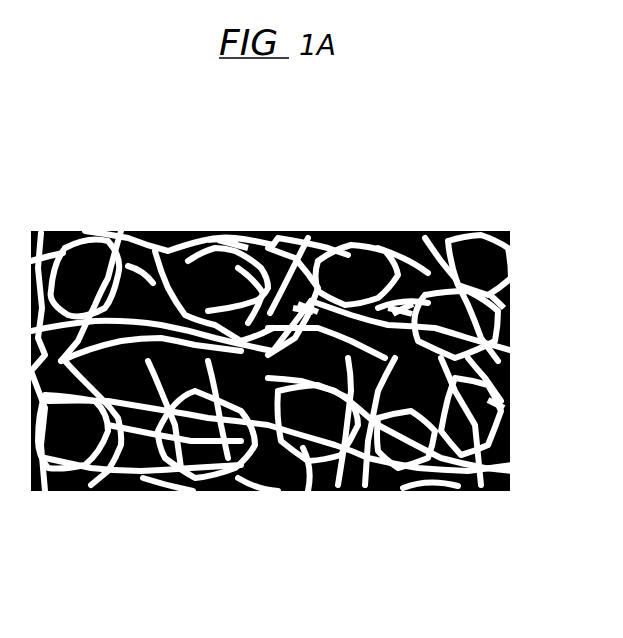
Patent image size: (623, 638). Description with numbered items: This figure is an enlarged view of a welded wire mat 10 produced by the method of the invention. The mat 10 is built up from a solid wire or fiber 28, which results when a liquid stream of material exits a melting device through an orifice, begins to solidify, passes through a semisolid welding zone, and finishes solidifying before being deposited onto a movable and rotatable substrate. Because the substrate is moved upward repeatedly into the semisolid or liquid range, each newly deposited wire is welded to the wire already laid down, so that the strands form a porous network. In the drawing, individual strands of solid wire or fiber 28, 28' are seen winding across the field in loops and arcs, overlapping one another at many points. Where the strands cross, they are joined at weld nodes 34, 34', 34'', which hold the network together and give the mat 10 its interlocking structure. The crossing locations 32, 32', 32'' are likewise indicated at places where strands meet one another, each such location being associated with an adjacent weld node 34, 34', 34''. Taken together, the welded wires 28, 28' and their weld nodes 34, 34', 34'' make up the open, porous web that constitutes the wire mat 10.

The welded wire mat 10 is at (196, 504).
The solid wire or fiber 28 is at (530, 275).
The solid wire or fiber 28' is at (532, 393).
The fiber crossing point 32 is at (224, 177).
The fiber crossing point 32' is at (321, 233).
The fiber crossing point 32'' is at (398, 223).
The weld node 34 is at (198, 202).
The weld node 34' is at (280, 234).
The weld node 34'' is at (443, 235).